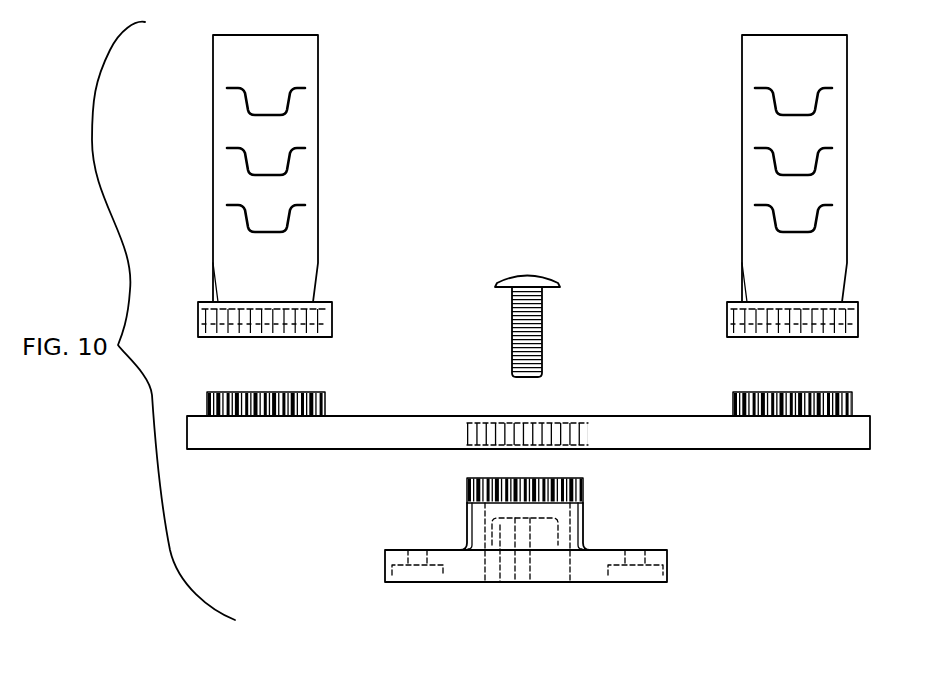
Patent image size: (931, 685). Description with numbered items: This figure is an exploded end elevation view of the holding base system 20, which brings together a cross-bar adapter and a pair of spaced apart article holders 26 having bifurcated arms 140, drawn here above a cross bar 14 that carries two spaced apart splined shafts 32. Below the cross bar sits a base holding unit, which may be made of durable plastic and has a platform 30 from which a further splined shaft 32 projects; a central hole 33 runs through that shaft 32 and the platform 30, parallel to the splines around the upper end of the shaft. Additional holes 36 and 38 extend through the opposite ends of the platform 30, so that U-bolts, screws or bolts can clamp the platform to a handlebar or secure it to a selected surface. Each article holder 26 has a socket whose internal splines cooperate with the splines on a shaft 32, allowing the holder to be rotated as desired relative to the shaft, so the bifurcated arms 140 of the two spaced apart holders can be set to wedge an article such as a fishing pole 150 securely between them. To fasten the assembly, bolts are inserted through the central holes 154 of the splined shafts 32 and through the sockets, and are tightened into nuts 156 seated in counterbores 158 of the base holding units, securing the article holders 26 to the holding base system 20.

The mounting plate 14 is at (357, 435).
The holding base system 20 is at (676, 538).
The article holder 26 is at (362, 190).
The platform 30 is at (667, 560).
The shaft 32 is at (325, 392).
The central hole 33 is at (515, 582).
The hole 36 is at (467, 490).
The hole 38 is at (640, 568).
The bifurcated arm 140 is at (287, 63).
The fishing pole 150 is at (547, 320).
The central hole 154 is at (543, 427).
The nut 156 is at (530, 582).
The counterbore 158 is at (500, 582).